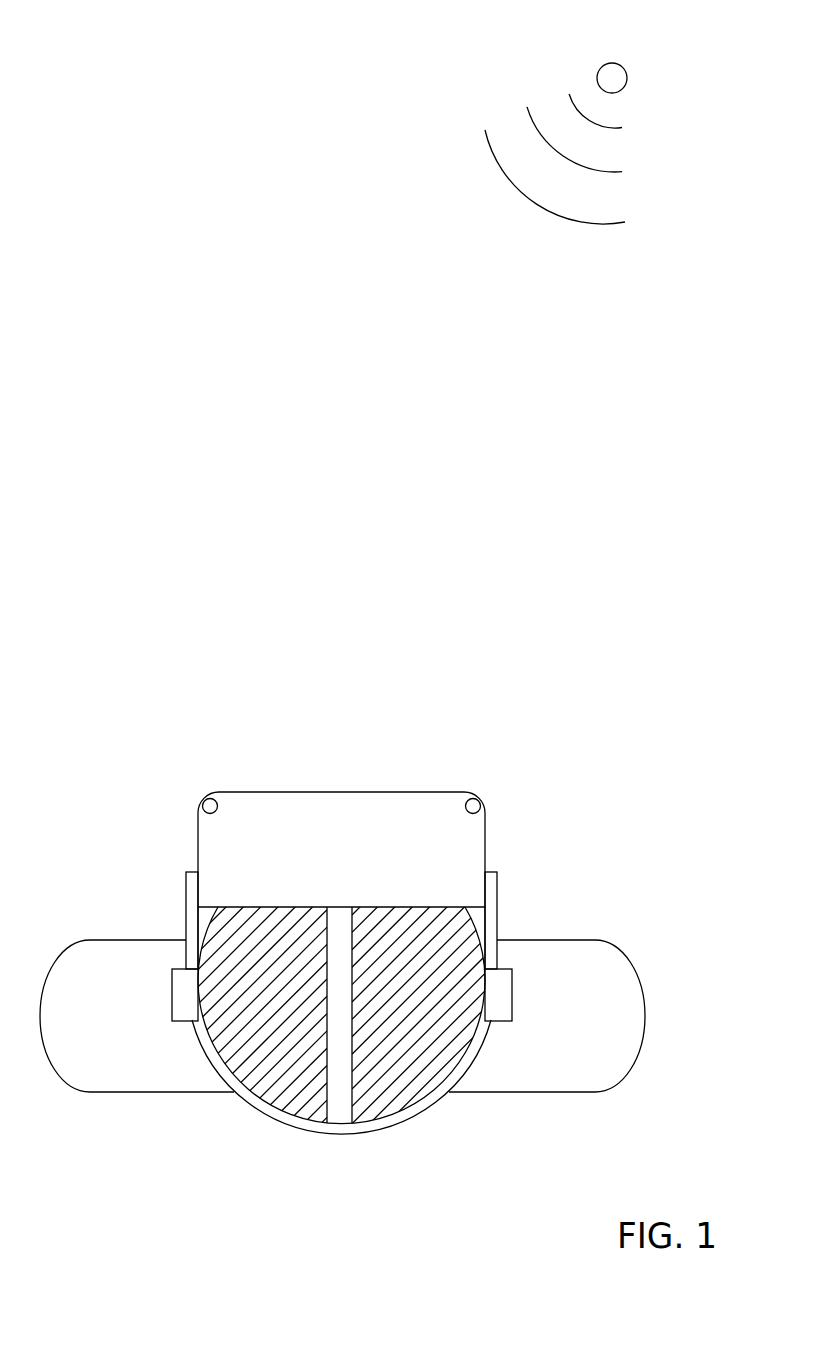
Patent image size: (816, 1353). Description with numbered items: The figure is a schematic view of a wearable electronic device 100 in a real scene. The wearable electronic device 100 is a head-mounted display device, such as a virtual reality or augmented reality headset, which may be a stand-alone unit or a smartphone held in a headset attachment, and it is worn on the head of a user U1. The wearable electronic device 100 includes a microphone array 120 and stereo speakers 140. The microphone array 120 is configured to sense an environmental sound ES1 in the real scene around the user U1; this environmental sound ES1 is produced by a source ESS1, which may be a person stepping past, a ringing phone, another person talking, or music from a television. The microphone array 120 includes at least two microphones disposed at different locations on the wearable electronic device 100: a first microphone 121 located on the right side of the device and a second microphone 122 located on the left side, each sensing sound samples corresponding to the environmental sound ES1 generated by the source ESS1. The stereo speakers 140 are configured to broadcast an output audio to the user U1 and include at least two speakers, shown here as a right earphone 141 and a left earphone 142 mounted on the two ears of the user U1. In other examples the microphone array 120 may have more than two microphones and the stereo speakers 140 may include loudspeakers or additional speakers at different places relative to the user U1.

The wearable electronic device 100 is at (198, 838).
The microphone array 120 is at (342, 731).
The first microphone 121 is at (465, 804).
The second microphone 122 is at (218, 802).
The stereo speakers 140 is at (345, 1098).
The right earphone 141 is at (497, 1021).
The left earphone 142 is at (185, 1022).
The environmental sound ES1 is at (598, 221).
The source ESS1 is at (627, 73).
The user U1 is at (567, 940).